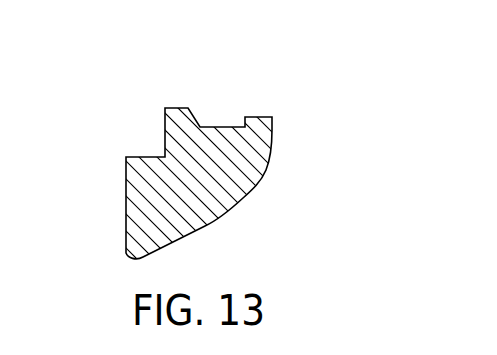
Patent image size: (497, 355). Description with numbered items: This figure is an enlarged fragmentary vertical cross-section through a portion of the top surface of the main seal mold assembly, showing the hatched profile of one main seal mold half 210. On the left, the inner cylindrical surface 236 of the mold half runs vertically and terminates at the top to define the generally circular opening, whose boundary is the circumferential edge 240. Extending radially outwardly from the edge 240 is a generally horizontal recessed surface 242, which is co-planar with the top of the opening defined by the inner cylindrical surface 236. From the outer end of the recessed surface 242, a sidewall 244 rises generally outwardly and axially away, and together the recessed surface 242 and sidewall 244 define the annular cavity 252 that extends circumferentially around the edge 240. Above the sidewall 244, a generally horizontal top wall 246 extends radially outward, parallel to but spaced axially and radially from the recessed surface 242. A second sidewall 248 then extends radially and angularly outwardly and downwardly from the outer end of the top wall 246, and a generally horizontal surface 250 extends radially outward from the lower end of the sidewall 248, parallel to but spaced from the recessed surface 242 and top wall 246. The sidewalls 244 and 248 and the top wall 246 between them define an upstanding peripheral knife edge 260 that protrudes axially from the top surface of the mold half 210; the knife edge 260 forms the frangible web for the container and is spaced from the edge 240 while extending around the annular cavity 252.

The main seal mold half 210 is at (226, 200).
The inner cylindrical surface 236 is at (126, 232).
The circumferential edge 240 is at (126, 158).
The recessed surface 242 is at (142, 156).
The sidewall 244 is at (157, 163).
The top wall 246 is at (177, 107).
The sidewall 248 is at (198, 120).
The horizontal surface 250 is at (222, 127).
The annular cavity 252 is at (130, 157).
The knife edge 260 is at (171, 120).